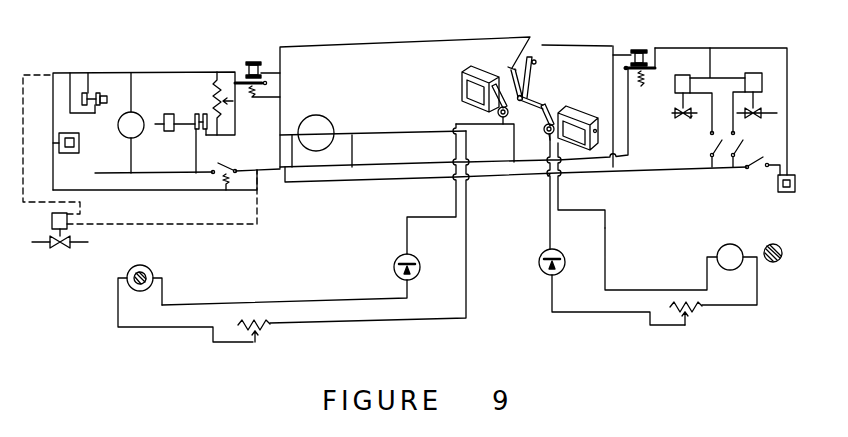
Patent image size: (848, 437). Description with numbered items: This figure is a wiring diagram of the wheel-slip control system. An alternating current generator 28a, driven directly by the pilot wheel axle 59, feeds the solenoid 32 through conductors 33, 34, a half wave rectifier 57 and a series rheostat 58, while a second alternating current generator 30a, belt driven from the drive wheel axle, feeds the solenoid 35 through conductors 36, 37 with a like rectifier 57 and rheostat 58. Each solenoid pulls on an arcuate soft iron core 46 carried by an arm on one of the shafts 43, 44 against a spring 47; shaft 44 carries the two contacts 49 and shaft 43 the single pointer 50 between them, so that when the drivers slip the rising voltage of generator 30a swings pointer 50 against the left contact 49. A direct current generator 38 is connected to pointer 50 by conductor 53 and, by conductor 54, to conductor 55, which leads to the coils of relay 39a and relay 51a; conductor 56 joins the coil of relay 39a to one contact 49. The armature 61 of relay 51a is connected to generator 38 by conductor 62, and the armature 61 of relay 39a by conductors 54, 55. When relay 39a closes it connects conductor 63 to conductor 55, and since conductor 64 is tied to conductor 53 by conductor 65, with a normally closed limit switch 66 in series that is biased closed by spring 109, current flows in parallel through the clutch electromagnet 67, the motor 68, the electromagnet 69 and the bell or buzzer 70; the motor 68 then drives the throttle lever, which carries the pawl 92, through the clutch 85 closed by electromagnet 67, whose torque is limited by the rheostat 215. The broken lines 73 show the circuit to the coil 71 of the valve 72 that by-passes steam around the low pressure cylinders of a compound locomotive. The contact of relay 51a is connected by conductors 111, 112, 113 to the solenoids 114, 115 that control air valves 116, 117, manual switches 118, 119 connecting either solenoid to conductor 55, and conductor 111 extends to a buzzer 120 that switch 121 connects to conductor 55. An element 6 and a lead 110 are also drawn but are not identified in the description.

The indicator 6 is at (773, 265).
The alternating current generator 28a is at (147, 269).
The alternating current generator 30a is at (728, 245).
The solenoid 32 is at (514, 136).
The conductor 33 is at (406, 236).
The conductor 34 is at (466, 240).
The solenoid 35 is at (548, 176).
The conductor 36 is at (550, 233).
The conductor 37 is at (561, 191).
The direct current generator 38 is at (329, 118).
The relay 39a is at (241, 66).
The shaft 43 is at (578, 114).
The shaft 44 is at (462, 80).
The arcuate core 46 is at (499, 118).
The spring 47 is at (499, 95).
The electrical contacts 49 is at (512, 68).
The pointer 50 is at (533, 80).
The relay 51a is at (654, 52).
The conductor 53 is at (405, 131).
The conductor 54 is at (293, 145).
The conductor 55 is at (280, 96).
The conductor 56 is at (424, 43).
The half wave rectifier 57 is at (394, 268).
The rheostat 58 is at (264, 329).
The pilot wheel axle 59 is at (136, 290).
The armature 61 is at (244, 94).
The conductor 62 is at (414, 166).
The conductor 63 is at (142, 73).
The conductor 64 is at (159, 173).
The conductor 65 is at (354, 152).
The limit switch 66 is at (221, 164).
The electromagnet 67 is at (197, 114).
The motor 68 is at (134, 113).
The electromagnet 69 is at (88, 73).
The bell or buzzer 70 is at (67, 151).
The coil 71 is at (52, 224).
The electromagnetically operated valve 72 is at (57, 247).
The broken lines 73 is at (25, 152).
The clutch 85 is at (170, 132).
The pawl 92 is at (108, 96).
The spring 109 is at (223, 184).
The conductor 110 is at (657, 58).
The conductor 111 is at (717, 51).
The conductor 112 is at (712, 71).
The conductor 113 is at (725, 82).
The solenoid 114 is at (678, 98).
The solenoid 115 is at (755, 74).
The air valve 116 is at (690, 118).
The air valve 117 is at (758, 113).
The manually operable switch 118 is at (710, 151).
The manually operable switch 119 is at (738, 153).
The buzzer 120 is at (786, 193).
The switch 121 is at (758, 166).
The rheostat 215 is at (214, 94).